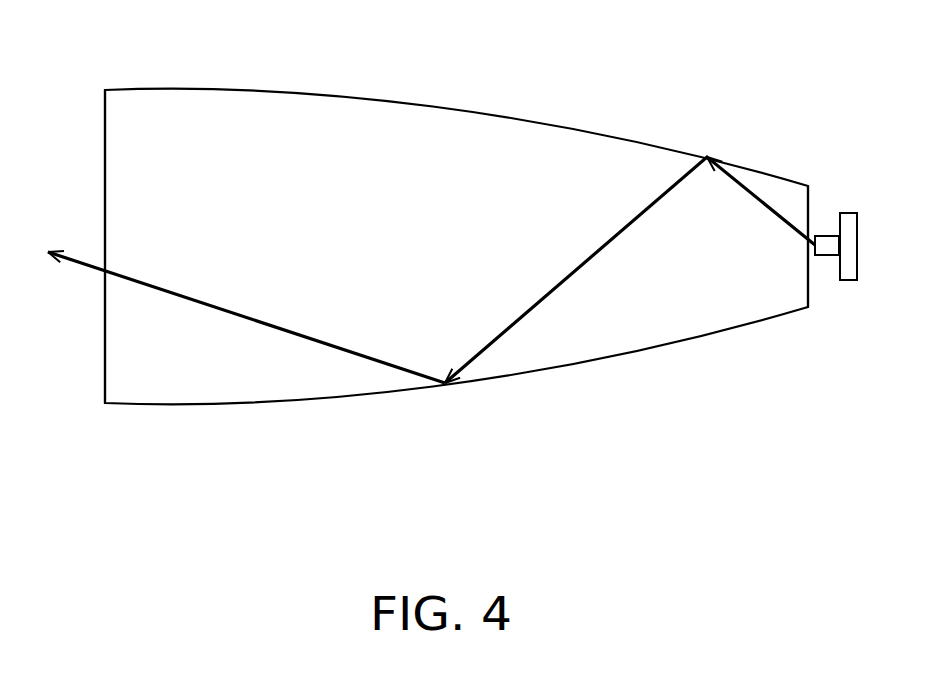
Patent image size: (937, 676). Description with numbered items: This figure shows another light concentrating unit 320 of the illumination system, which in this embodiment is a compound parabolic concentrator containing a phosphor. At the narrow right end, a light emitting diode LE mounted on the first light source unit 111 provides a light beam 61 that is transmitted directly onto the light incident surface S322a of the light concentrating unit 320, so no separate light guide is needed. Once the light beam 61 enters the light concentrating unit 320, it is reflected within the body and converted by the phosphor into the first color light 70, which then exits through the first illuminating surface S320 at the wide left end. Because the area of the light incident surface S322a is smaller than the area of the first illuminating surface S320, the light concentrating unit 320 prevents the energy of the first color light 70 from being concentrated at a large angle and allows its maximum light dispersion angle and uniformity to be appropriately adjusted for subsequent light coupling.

The light concentrating unit 320 is at (563, 345).
The first illuminating surface S320 is at (105, 130).
The light incident surface S322a is at (818, 196).
The light emitting diode LE is at (828, 256).
The first light source unit 111 is at (848, 270).
The light beam 61 is at (677, 178).
The first color light 70 is at (82, 263).